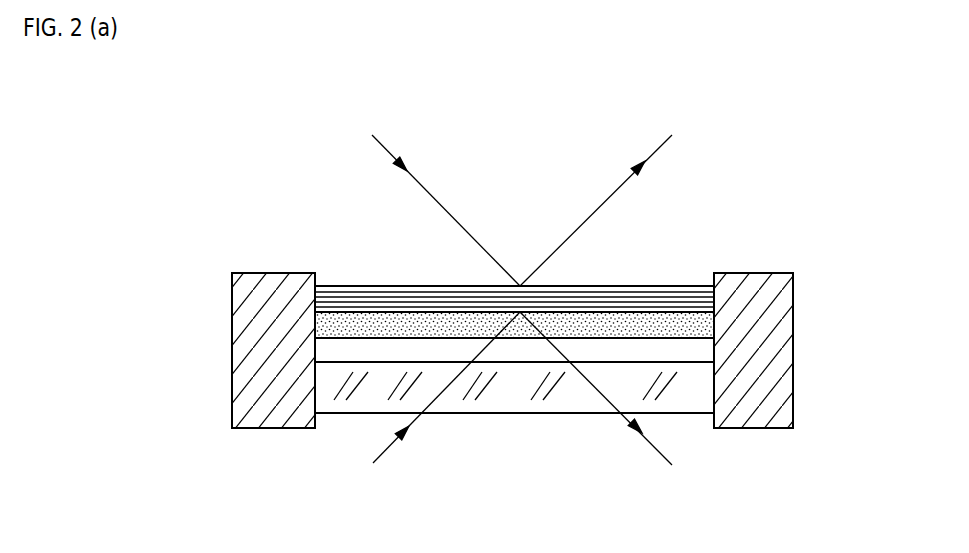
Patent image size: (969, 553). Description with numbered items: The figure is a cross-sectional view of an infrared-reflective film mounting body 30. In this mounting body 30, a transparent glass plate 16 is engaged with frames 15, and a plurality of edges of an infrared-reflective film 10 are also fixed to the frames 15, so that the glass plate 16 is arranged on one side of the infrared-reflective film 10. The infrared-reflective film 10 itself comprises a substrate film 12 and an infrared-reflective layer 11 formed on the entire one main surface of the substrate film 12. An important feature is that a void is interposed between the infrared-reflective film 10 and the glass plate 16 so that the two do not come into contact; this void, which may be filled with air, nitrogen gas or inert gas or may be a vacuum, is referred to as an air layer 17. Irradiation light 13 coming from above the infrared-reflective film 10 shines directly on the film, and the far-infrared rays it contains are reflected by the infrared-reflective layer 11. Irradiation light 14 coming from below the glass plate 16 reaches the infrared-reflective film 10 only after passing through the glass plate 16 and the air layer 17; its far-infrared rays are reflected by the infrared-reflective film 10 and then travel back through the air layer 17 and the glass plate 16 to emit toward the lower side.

The infrared-reflective film 10 is at (368, 265).
The infrared-reflective layer 11 is at (430, 285).
The substrate film 12 is at (428, 338).
The irradiation light 13 is at (431, 201).
The irradiation light 14 is at (507, 402).
The frames 15 is at (233, 273).
The glass plate 16 is at (513, 413).
The air layer 17 is at (630, 350).
The infrared-reflective film mounting body 30 is at (758, 205).